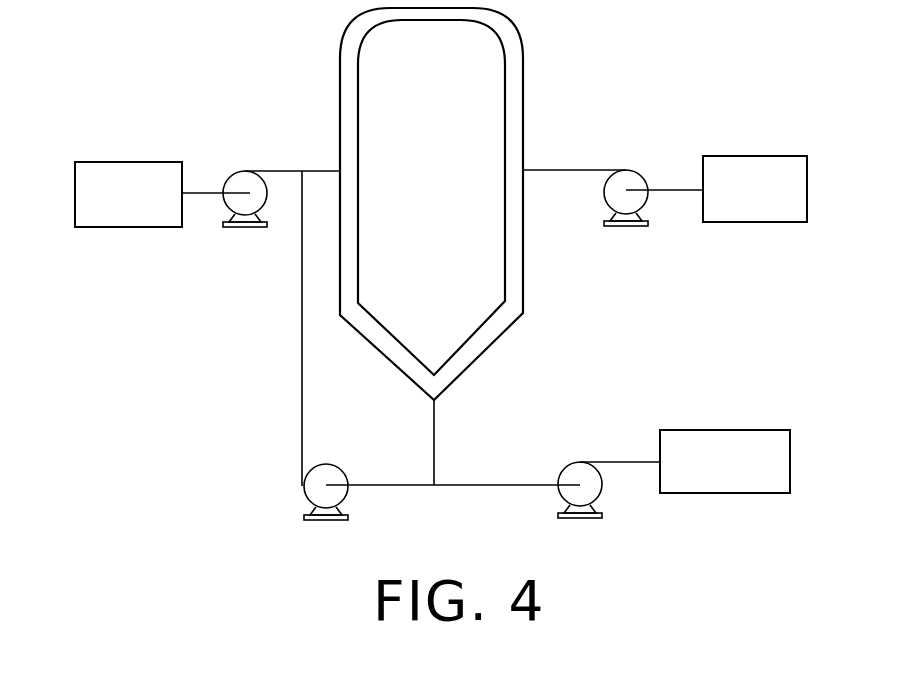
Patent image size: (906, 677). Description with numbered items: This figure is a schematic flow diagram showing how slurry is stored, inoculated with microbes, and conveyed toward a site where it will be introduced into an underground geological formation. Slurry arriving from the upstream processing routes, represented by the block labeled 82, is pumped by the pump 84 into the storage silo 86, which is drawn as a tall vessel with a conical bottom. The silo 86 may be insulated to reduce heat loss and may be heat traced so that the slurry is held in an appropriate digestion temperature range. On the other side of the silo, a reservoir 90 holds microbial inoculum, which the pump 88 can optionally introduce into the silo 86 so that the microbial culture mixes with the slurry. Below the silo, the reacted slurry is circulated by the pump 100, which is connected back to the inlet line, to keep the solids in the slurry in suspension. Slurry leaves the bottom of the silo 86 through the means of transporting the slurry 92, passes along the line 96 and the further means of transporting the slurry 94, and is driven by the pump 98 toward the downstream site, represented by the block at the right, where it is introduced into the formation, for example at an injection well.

The apparatus of FIG. 1 82 is at (128, 162).
The pump 84 is at (243, 171).
The storage silo 86 is at (524, 298).
The pump 88 is at (628, 170).
The reservoir 90 is at (750, 156).
The means of transporting the slurry 92 is at (434, 432).
The means of transporting the slurry 94 is at (513, 487).
The conduit 96 is at (405, 487).
The pump 98 is at (575, 462).
The pump 100 is at (305, 496).